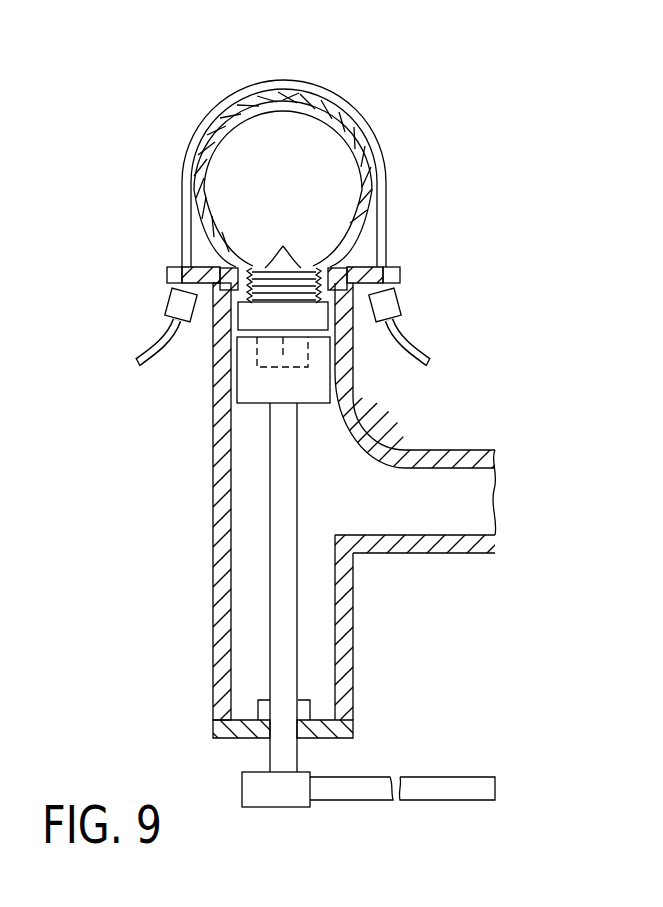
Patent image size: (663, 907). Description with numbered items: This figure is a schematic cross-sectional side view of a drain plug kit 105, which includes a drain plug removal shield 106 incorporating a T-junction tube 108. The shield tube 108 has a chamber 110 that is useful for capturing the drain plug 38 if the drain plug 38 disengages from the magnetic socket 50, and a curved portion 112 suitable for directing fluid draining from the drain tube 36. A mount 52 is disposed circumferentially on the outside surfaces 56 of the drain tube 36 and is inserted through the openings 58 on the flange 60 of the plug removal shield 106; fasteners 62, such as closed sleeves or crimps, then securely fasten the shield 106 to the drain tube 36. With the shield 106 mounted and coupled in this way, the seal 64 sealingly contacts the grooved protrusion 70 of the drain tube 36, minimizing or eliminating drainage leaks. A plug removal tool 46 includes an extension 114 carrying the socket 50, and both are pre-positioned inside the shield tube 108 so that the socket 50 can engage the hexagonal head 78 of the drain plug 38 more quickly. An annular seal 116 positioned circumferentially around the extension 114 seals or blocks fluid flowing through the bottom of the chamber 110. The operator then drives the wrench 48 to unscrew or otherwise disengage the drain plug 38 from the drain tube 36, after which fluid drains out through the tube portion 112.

The drain tube 36 is at (291, 99).
The drain plug 38 is at (296, 329).
The plug removal tool 46 is at (276, 829).
The wrench 48 is at (352, 800).
The magnetic socket 50 is at (296, 398).
The mount 52 is at (358, 113).
The outside surfaces 56 is at (193, 144).
The openings 58 is at (183, 267).
The flange 60 is at (167, 277).
The fasteners 62 is at (168, 303).
The seal 64 is at (233, 260).
The grooved protrusion 70 is at (283, 246).
The hexagonal head 78 is at (310, 352).
The drain plug kit 105 is at (490, 346).
The drain plug removal shield 106 is at (331, 453).
The T-junction tube 108 is at (213, 550).
The chamber 110 is at (320, 612).
The curved portion 112 is at (440, 498).
The extension 114 is at (285, 512).
The annular seal 116 is at (263, 708).